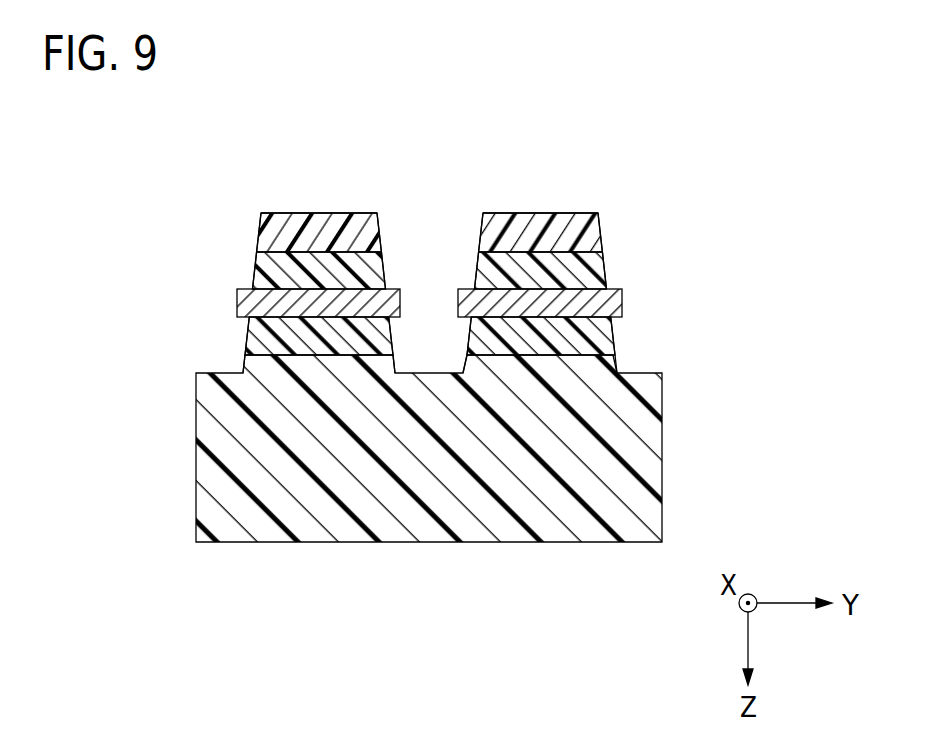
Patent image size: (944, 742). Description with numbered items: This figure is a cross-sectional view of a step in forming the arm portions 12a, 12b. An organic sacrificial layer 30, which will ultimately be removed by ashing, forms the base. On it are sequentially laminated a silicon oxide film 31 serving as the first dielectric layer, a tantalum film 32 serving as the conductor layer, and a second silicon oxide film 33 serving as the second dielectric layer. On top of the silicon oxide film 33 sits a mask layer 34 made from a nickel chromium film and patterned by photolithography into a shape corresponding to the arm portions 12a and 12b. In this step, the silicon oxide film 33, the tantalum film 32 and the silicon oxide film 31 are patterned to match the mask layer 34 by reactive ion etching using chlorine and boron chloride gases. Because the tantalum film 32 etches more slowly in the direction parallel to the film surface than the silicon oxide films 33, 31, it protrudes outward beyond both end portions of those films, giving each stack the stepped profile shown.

The arm portion 12a is at (551, 190).
The arm portion 12b is at (319, 293).
The organic sacrificial layer 30 is at (640, 446).
The silicon oxide film 31 is at (250, 333).
The tantalum film 32 is at (238, 301).
The silicon oxide film 33 is at (258, 266).
The mask layer 34 is at (262, 229).